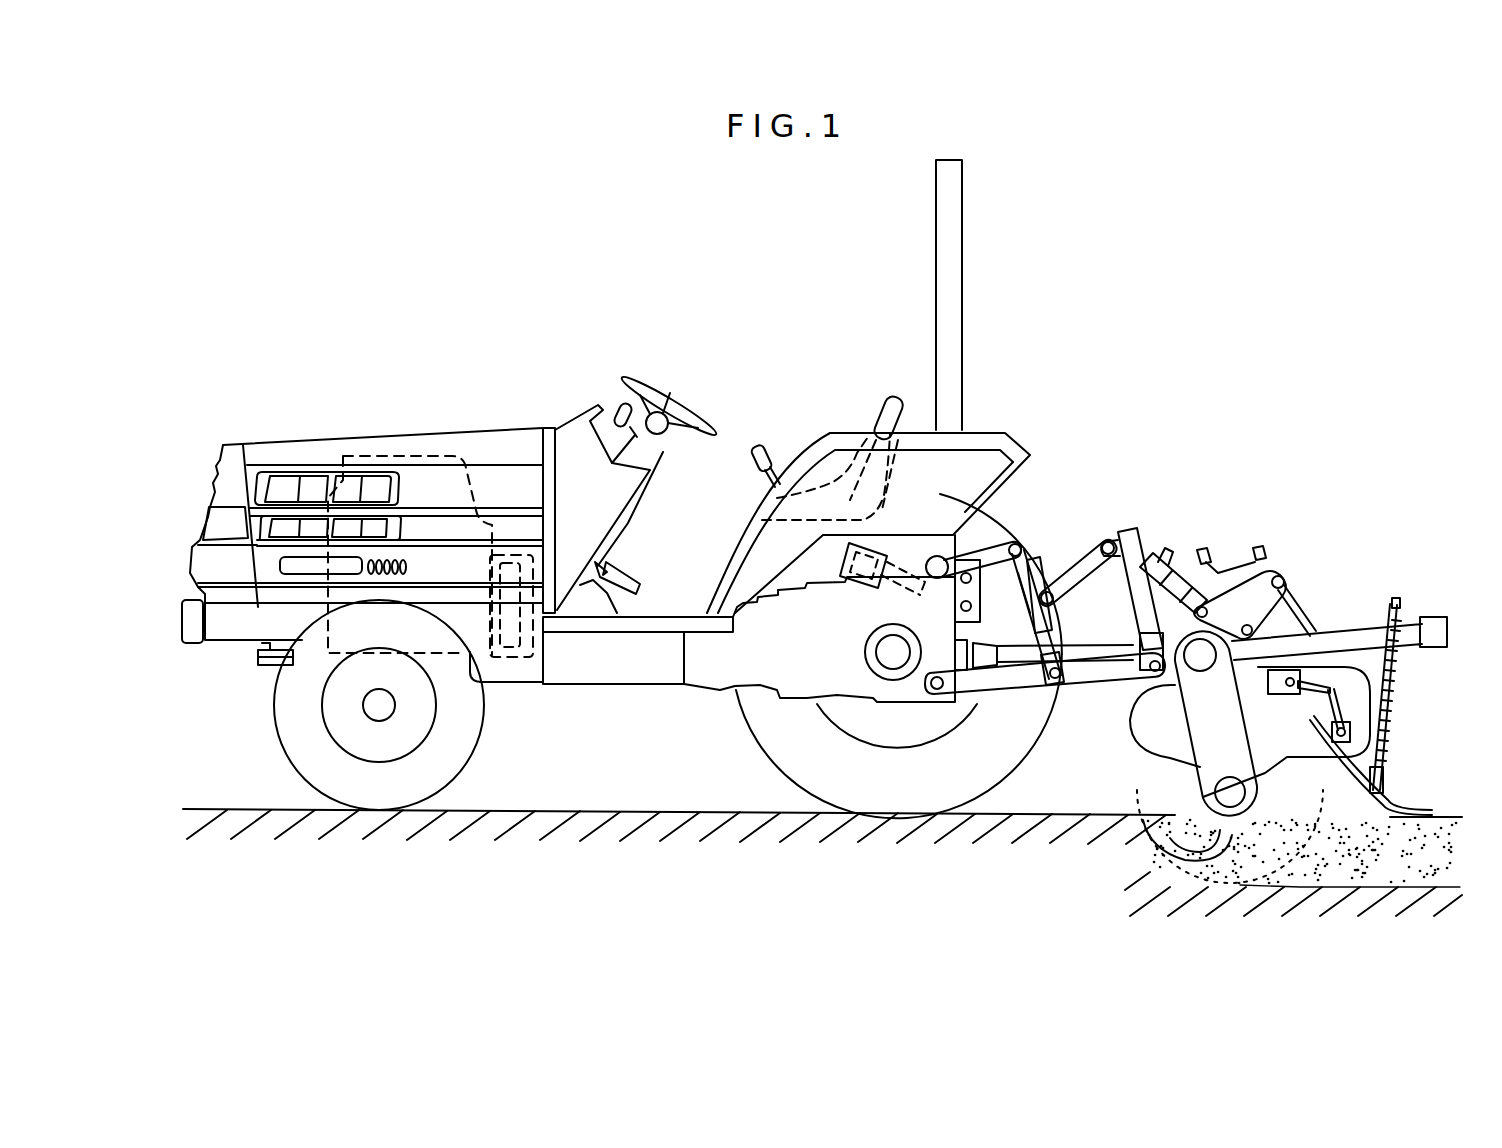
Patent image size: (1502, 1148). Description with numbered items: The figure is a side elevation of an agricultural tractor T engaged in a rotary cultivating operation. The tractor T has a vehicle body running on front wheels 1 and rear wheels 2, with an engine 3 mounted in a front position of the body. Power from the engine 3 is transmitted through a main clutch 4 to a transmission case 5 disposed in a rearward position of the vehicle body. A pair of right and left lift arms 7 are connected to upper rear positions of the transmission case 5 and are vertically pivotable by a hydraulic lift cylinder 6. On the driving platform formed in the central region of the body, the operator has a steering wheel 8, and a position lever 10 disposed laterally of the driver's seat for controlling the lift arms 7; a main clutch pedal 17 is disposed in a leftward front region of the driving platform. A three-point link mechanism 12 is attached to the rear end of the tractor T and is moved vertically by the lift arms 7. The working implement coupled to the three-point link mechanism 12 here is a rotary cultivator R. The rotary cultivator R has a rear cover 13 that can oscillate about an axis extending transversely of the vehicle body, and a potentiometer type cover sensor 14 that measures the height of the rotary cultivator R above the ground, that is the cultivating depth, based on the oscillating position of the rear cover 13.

The front wheels 1 is at (275, 736).
The rear wheels 2 is at (760, 748).
The engine 3 is at (419, 455).
The main clutch 4 is at (511, 655).
The transmission case 5 is at (790, 673).
The hydraulic lift cylinder 6 is at (870, 592).
The lift arms 7 is at (982, 556).
The steering wheel 8 is at (669, 400).
The position lever 10 is at (770, 452).
The three-point link mechanism 12 is at (1078, 558).
The rear cover 13 is at (1408, 805).
The cover sensor 14 is at (1317, 655).
The main clutch pedal 17 is at (637, 582).
The tractor T is at (745, 410).
The rotary cultivator R is at (1305, 555).